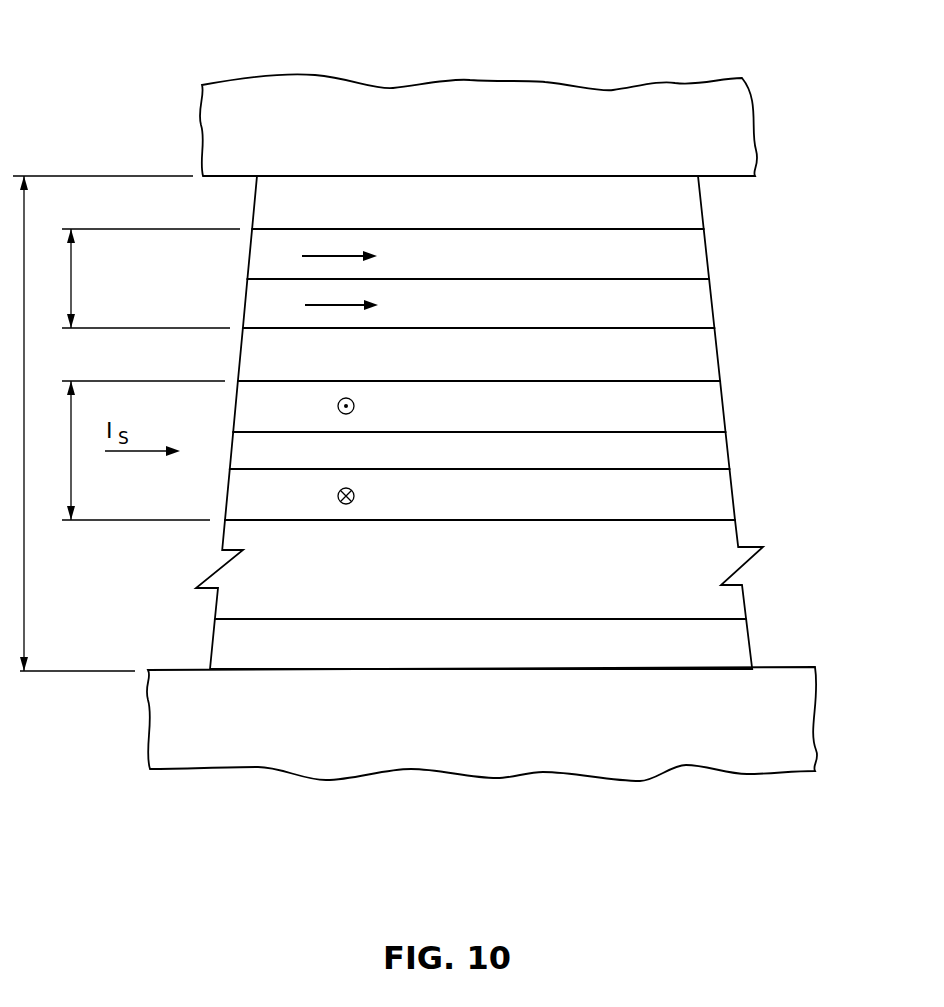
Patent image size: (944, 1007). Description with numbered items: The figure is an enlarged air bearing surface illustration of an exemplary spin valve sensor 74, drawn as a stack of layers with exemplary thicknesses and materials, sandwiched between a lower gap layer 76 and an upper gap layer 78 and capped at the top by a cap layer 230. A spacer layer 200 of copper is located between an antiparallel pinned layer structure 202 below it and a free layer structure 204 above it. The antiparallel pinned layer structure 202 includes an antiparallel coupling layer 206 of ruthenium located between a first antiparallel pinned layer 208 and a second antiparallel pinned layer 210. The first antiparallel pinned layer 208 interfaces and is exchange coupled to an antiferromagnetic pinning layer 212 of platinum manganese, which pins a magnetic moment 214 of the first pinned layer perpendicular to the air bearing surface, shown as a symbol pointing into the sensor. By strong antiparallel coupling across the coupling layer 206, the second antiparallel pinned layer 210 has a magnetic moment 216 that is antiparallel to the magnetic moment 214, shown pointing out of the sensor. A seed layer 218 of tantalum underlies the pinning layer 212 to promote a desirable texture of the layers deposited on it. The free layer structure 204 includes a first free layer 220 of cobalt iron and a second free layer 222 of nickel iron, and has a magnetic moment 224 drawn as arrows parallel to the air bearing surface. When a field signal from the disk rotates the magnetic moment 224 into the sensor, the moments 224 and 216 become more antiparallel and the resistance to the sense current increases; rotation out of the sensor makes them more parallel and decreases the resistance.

The spin valve sensor 74 is at (24, 671).
The first gap layer G1 76 is at (777, 763).
The second gap layer G2 78 is at (748, 108).
The spacer layer 200 is at (716, 349).
The antiparallel pinned layer structure 202 is at (71, 328).
The free layer structure 204 is at (71, 229).
The antiparallel coupling layer 206 is at (727, 450).
The first antiparallel pinned layer 208 is at (732, 490).
The second antiparallel pinned layer 210 is at (721, 401).
The antiferromagnetic pinning layer 212 is at (745, 590).
The magnetic moment of the first AP pinned layer 214 is at (338, 493).
The magnetic moment of the second AP pinned layer 216 is at (337, 405).
The seed layer 218 is at (752, 640).
The first free layer 220 is at (711, 303).
The second free layer 222 is at (705, 254).
The magnetic moment of the free layer structure 224 is at (325, 255).
The cap layer 230 is at (700, 203).